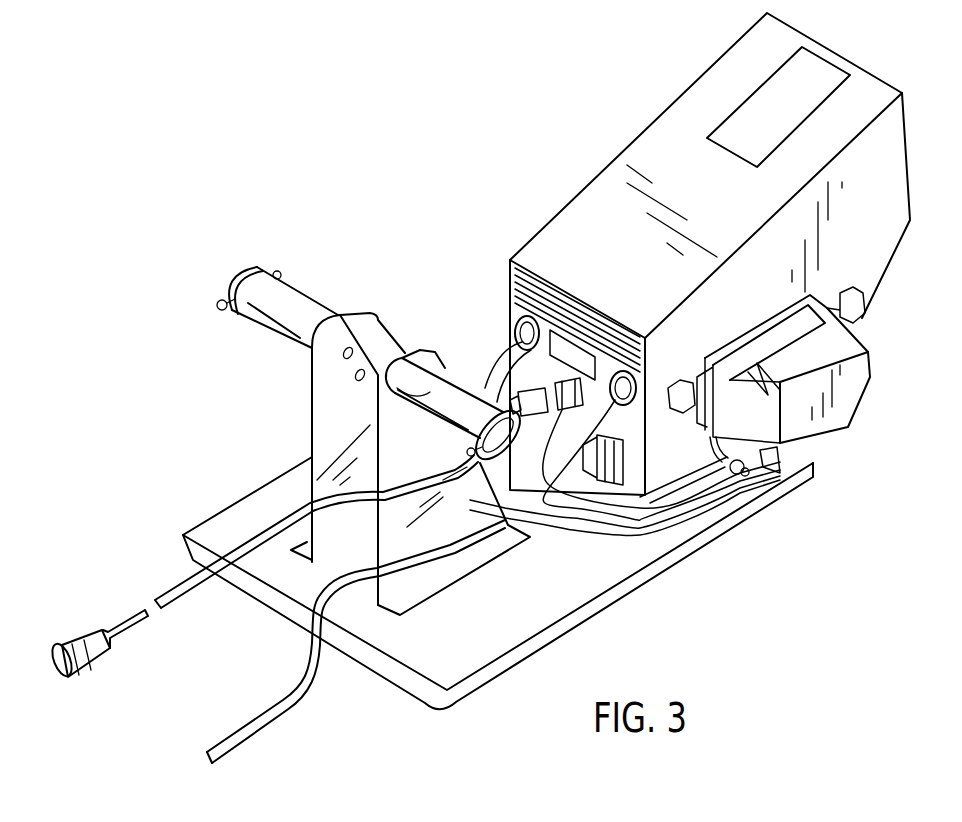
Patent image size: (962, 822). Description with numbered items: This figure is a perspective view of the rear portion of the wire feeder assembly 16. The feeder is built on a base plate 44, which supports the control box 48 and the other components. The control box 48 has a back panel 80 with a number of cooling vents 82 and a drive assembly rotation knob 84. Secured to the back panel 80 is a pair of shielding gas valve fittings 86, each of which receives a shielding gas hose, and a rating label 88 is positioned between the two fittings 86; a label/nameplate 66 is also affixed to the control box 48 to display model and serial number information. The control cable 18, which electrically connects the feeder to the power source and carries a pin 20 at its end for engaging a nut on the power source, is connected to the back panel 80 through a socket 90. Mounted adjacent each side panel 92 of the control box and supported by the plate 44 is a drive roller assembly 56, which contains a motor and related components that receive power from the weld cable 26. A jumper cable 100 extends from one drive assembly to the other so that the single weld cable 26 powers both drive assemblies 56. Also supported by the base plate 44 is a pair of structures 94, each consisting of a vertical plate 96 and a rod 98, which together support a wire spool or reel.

The wire feeder assembly 16 is at (345, 141).
The control cable 18 is at (178, 592).
The pin 20 is at (77, 677).
The weld cable 26 is at (280, 715).
The base plate 44 is at (515, 615).
The control box 48 is at (674, 147).
The drive roller assembly 56 is at (853, 377).
The label/nameplate 66 is at (815, 73).
The back panel 80 is at (545, 315).
The cooling vents 82 is at (613, 308).
The drive assembly rotation knob 84 is at (520, 392).
The shielding gas valve fittings 86 is at (516, 322).
The rating label 88 is at (575, 331).
The socket 90 is at (623, 365).
The side panel 92 is at (878, 242).
The structures 94 is at (340, 244).
The vertical plate 96 is at (427, 466).
The rod 98 is at (385, 422).
The jumper cable 100 is at (648, 505).